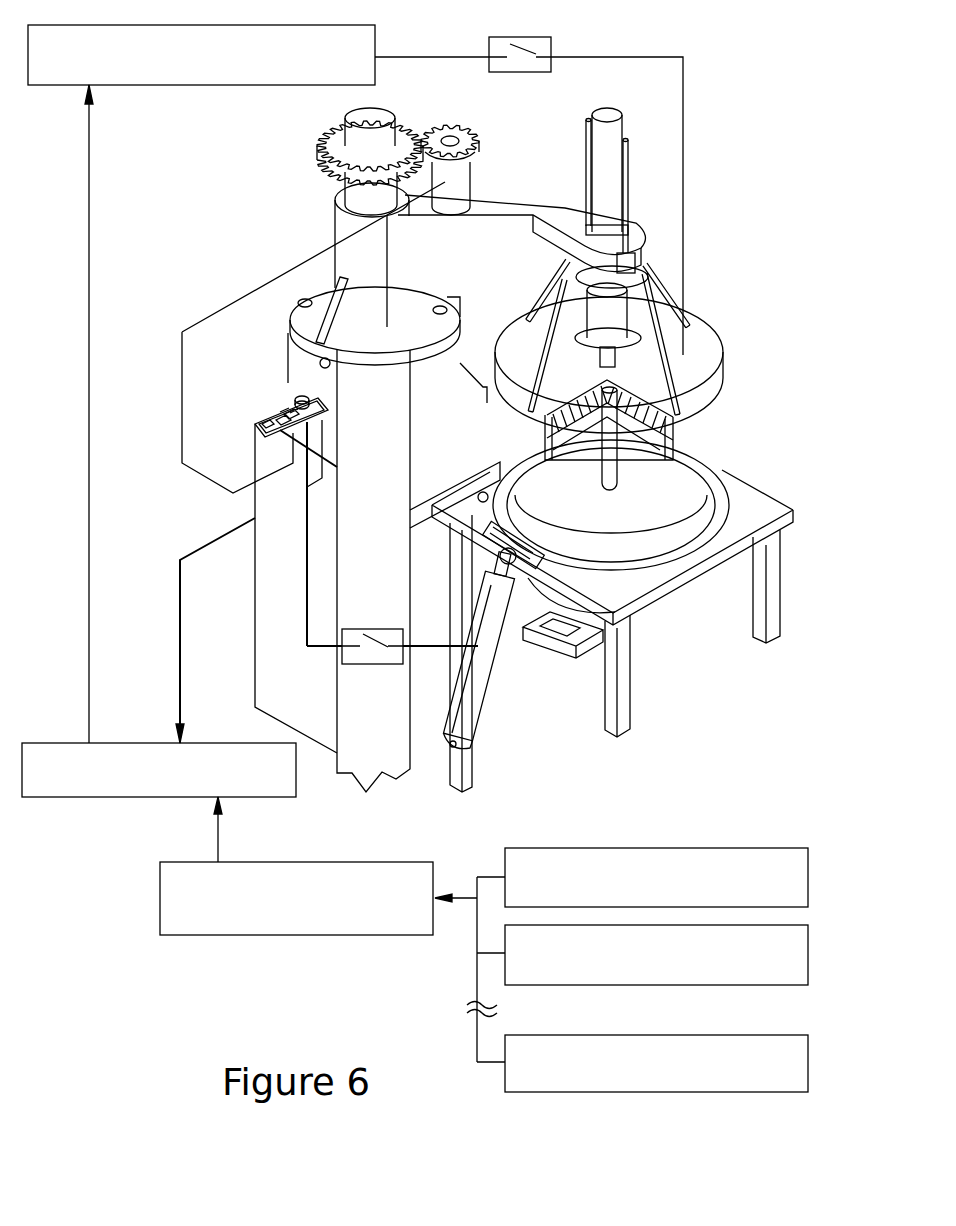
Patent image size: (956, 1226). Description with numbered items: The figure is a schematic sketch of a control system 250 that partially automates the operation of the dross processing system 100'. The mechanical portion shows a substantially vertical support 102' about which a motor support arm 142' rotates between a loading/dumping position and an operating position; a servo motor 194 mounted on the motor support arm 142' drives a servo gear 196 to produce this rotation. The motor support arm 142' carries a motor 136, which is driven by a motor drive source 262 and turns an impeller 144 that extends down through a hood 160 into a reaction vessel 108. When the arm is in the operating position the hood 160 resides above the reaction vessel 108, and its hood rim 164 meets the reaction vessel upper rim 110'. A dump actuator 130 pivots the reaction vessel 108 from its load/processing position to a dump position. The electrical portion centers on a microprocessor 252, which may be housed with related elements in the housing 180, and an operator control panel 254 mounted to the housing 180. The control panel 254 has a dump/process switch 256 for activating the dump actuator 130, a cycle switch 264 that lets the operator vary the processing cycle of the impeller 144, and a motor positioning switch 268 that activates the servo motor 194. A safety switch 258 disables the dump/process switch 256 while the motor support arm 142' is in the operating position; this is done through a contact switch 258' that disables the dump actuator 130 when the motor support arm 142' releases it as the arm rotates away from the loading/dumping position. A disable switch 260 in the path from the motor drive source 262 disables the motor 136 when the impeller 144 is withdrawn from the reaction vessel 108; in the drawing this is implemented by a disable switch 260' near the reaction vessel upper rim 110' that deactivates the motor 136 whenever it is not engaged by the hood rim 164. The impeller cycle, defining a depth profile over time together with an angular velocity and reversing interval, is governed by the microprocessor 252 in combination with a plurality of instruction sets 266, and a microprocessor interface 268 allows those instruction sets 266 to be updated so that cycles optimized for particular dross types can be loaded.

The dross processing system 100' is at (708, 181).
The substantially vertical support 102' is at (303, 487).
The reaction vessel 108 is at (708, 479).
The reaction vessel upper rim 110' is at (455, 445).
The dump actuator 130 is at (478, 627).
The motor 136 is at (615, 303).
The motor support arm 142' is at (517, 230).
The impeller 144 is at (612, 448).
The hood 160 is at (720, 342).
The hood rim 164 is at (718, 403).
The housing 180 is at (268, 572).
The servo motor 194 is at (465, 182).
The servo gear 196 is at (300, 300).
The control system 250 is at (130, 998).
The microprocessor 252 is at (120, 797).
The operator control panel 254 is at (244, 452).
The dump/process switch 256 is at (285, 408).
The safety switch 258 is at (375, 667).
The contact switch 258' is at (362, 408).
The disable switch 260 is at (529, 178).
The disable switch 260' is at (450, 474).
The motor drive source 262 is at (163, 85).
The cycle switch 264 is at (297, 398).
The instruction sets 266 is at (693, 985).
The microprocessor interface 268 is at (283, 935).